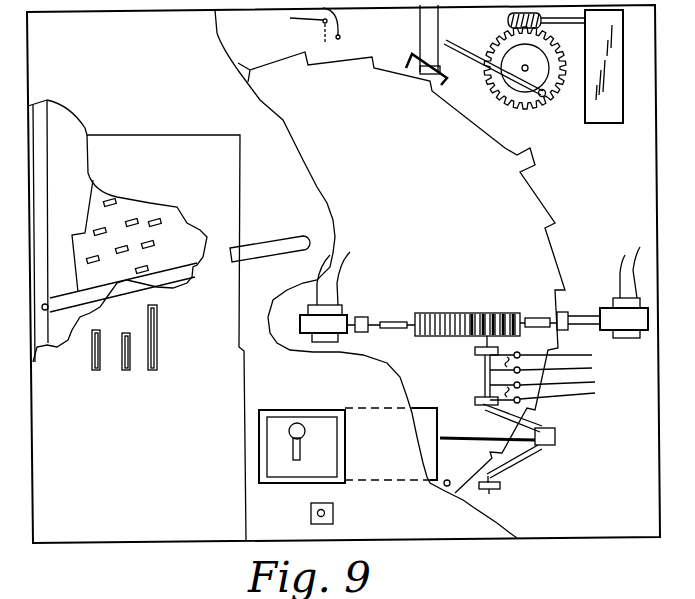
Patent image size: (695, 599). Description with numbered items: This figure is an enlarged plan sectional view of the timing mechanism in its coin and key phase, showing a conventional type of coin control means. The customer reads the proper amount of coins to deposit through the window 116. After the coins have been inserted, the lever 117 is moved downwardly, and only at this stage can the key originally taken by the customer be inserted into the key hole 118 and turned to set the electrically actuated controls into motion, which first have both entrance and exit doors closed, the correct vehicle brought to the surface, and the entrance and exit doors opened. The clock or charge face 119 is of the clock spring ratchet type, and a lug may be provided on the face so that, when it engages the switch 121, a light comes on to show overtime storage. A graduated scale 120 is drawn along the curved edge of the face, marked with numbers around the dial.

The window 116 is at (333, 513).
The lever 117 is at (270, 246).
The key hole 118 is at (294, 440).
The clock or charge face 119 is at (453, 257).
The graduated scale 120 is at (537, 168).
The switch 121 is at (340, 37).